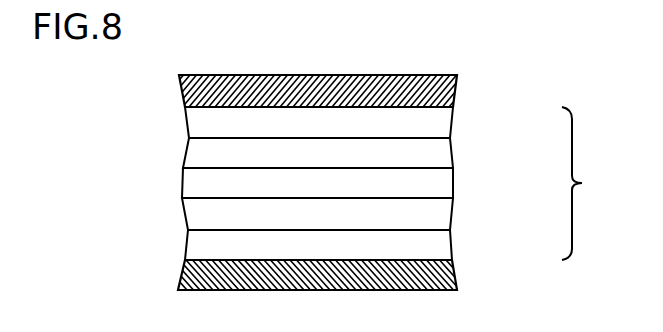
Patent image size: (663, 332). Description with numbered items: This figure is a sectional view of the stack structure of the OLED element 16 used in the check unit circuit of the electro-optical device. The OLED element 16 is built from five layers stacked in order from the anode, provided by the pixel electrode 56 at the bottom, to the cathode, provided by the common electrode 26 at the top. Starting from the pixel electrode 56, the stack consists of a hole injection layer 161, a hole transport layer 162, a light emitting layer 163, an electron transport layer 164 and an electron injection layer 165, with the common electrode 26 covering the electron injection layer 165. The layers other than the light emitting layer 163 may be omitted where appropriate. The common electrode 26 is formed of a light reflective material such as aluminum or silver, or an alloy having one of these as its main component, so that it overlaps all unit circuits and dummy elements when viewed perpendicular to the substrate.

The common electrode 26 is at (456, 89).
The electron injection layer 165 is at (454, 118).
The electron transport layer 164 is at (452, 148).
The light emitting layer 163 is at (454, 178).
The hole transport layer 162 is at (453, 208).
The hole injection layer 161 is at (452, 238).
The OLED element 16 is at (586, 183).
The pixel electrode 56 is at (456, 282).